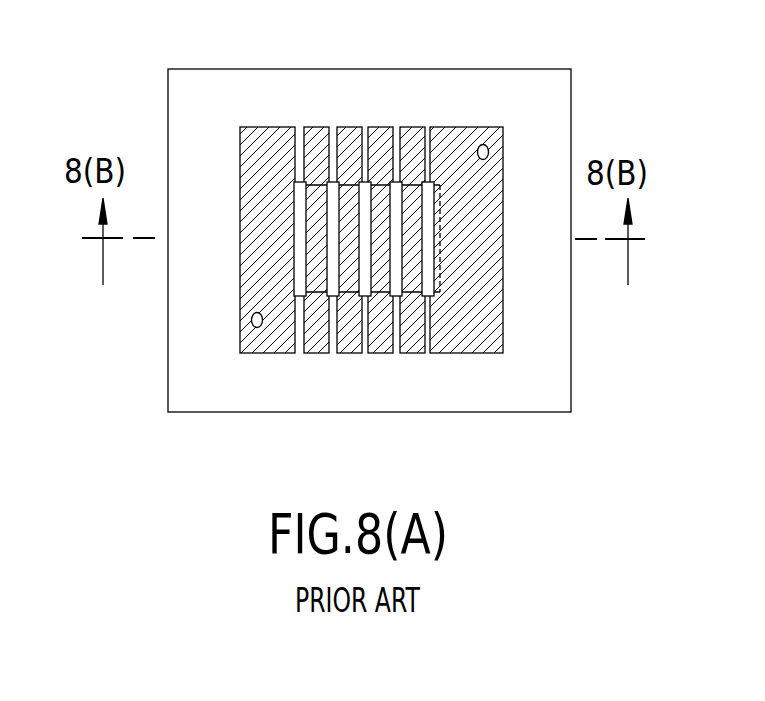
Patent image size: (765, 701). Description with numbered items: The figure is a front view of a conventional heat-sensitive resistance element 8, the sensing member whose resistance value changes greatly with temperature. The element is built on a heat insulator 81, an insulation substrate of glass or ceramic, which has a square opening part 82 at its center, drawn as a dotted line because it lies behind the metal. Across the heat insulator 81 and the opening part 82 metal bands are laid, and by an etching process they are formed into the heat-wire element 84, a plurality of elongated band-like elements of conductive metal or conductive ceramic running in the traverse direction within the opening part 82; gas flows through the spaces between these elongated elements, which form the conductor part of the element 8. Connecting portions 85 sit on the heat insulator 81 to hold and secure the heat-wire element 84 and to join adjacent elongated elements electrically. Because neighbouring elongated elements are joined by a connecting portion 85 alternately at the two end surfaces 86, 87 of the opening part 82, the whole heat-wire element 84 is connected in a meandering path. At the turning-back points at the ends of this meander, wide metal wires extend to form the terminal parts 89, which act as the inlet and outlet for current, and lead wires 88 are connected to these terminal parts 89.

The heat-sensitive resistance element 8 is at (342, 238).
The heat insulator 81 is at (483, 378).
The opening part 82 is at (300, 246).
The heat-wire element 84 is at (440, 268).
The connecting portions 85 is at (330, 142).
The end surface of the opening part 86 is at (366, 184).
The end surface of the opening part 87 is at (340, 296).
The lead wires 88 is at (483, 145).
The terminal parts 89 is at (490, 150).